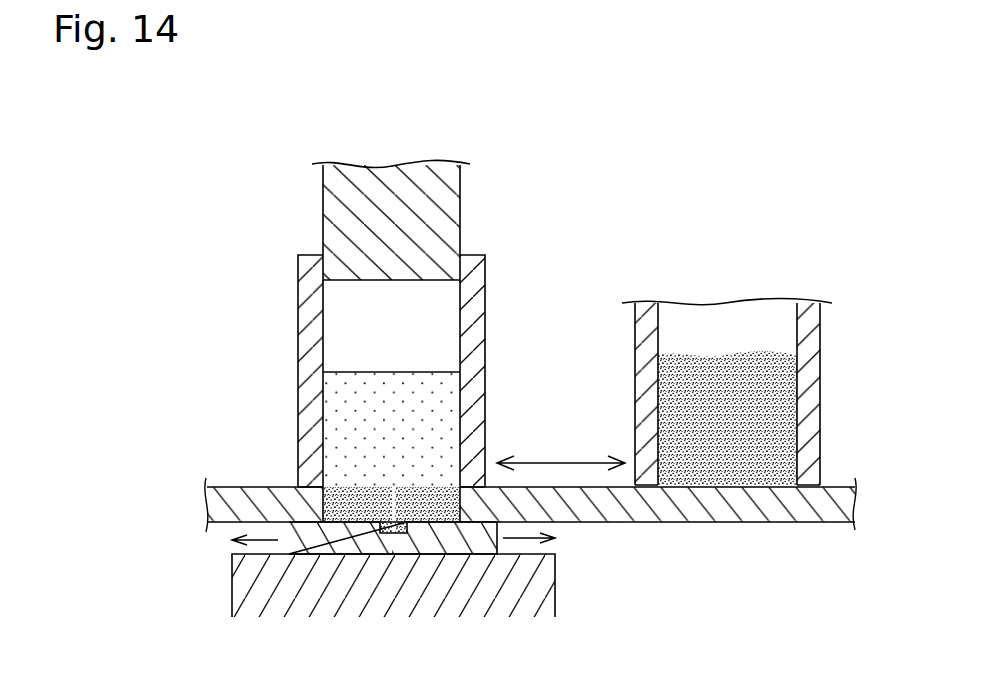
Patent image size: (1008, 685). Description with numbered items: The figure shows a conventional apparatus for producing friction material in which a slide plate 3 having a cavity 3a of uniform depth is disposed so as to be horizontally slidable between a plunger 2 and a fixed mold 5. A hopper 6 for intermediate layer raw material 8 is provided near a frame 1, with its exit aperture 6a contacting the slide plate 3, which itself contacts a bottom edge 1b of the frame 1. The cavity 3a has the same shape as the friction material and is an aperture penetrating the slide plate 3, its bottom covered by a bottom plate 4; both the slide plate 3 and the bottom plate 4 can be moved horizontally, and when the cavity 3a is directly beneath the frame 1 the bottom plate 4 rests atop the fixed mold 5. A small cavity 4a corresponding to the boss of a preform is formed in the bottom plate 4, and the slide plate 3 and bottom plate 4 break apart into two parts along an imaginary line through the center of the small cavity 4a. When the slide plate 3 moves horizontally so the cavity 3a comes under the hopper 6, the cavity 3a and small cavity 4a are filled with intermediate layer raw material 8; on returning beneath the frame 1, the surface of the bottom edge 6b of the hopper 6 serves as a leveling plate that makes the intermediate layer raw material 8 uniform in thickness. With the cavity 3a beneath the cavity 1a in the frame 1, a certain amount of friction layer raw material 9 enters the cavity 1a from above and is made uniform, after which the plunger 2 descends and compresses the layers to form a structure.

The frame 1 is at (485, 295).
The cavity in the frame 1a is at (335, 307).
The bottom edge of the frame 1b is at (303, 490).
The plunger 2 is at (460, 198).
The slide plate 3 is at (707, 510).
The cavity 3a is at (347, 503).
The bottom plate 4 is at (497, 545).
The small cavity 4a is at (383, 527).
The fixed mold 5 is at (232, 605).
The hopper 6 is at (820, 337).
The exit aperture 6a is at (720, 480).
The bottom edge of the hopper 6b is at (810, 494).
The intermediate layer raw material 8 is at (433, 500).
The friction layer raw material 9 is at (353, 372).